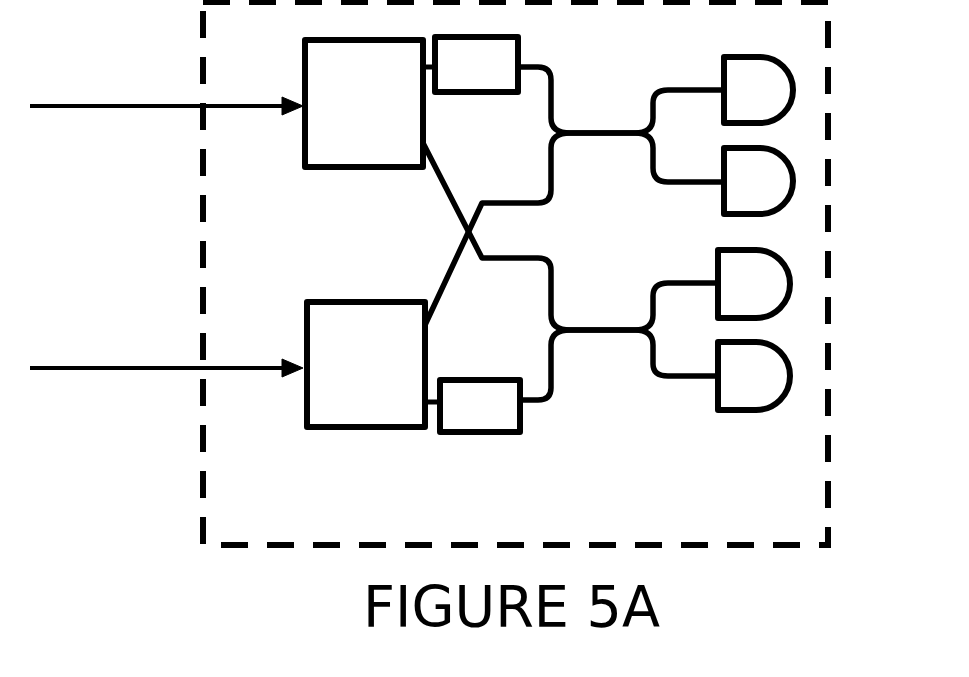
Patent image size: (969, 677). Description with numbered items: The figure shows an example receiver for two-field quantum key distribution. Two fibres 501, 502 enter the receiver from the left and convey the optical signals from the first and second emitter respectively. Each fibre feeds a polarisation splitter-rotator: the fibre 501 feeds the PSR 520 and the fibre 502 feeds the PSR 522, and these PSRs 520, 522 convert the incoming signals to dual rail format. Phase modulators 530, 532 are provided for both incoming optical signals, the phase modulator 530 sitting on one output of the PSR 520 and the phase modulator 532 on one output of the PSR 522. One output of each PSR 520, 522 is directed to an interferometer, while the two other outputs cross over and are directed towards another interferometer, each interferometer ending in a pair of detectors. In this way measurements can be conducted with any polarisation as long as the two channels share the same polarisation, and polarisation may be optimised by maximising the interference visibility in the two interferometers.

The fibre 501 is at (166, 84).
The fibre 502 is at (166, 346).
The PSR 520 is at (364, 103).
The PSR 522 is at (366, 364).
The phase modulator 530 is at (470, 64).
The phase modulator 532 is at (472, 406).